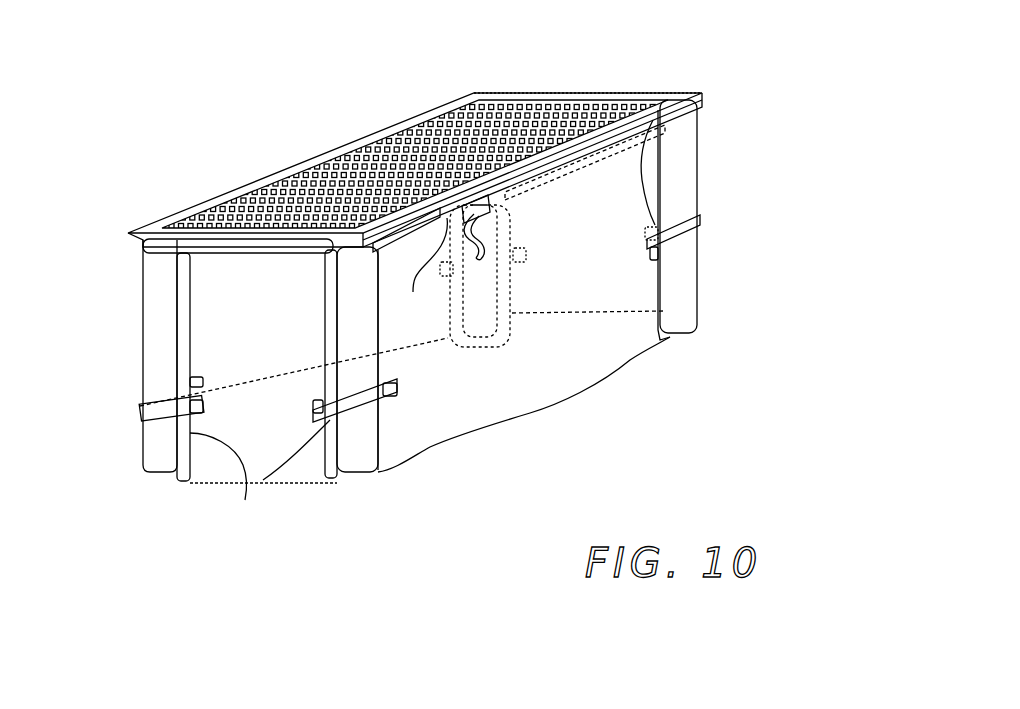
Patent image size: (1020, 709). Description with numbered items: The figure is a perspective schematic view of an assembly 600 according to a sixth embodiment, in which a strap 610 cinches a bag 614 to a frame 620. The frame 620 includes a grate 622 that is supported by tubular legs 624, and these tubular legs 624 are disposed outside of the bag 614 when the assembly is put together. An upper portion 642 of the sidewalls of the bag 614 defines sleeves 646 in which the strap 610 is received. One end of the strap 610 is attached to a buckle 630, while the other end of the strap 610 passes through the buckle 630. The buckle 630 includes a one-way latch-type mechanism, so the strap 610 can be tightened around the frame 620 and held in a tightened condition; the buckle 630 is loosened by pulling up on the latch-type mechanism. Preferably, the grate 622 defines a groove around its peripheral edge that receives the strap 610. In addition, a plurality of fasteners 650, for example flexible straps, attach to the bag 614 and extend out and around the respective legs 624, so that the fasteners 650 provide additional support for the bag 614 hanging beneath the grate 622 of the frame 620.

The assembly 600 is at (236, 102).
The strap 610 is at (163, 253).
The bag 614 is at (570, 397).
The frame 620 is at (633, 93).
The grate 622 is at (503, 120).
The tubular legs 624 is at (700, 160).
The buckle 630 is at (477, 217).
The upper portion 642 is at (257, 250).
The sleeves 646 is at (420, 270).
The fasteners 650 is at (190, 433).